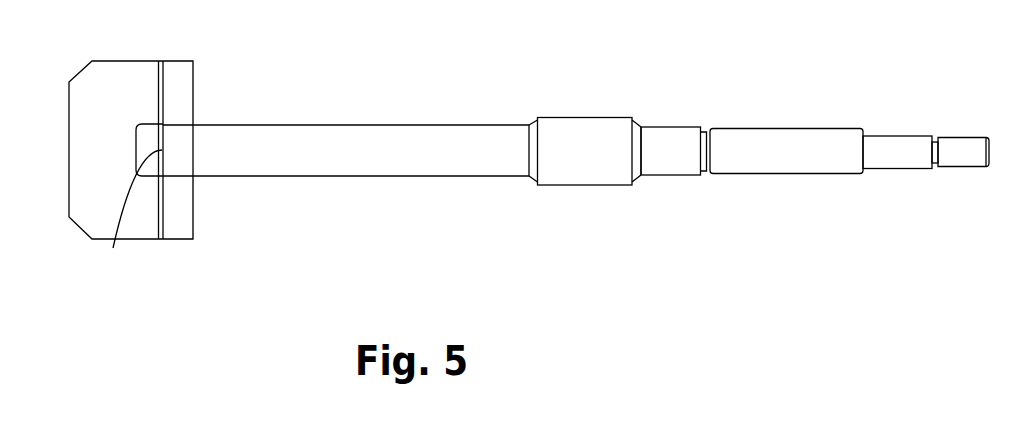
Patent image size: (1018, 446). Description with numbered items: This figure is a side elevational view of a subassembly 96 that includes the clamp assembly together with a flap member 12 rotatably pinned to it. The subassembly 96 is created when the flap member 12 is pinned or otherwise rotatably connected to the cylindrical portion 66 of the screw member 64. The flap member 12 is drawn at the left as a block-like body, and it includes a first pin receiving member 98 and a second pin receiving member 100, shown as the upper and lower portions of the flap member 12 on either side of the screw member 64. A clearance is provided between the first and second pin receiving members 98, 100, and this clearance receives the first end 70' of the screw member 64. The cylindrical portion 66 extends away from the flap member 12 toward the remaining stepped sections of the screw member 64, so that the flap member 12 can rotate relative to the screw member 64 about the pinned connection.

The flap member 12 is at (85, 102).
The first pin receiving member 98 is at (180, 93).
The second pin receiving member 100 is at (180, 205).
The first end 70' is at (130, 213).
The cylindrical portion 66 is at (370, 142).
The screw member 64 is at (562, 137).
The subassembly 96 is at (593, 95).